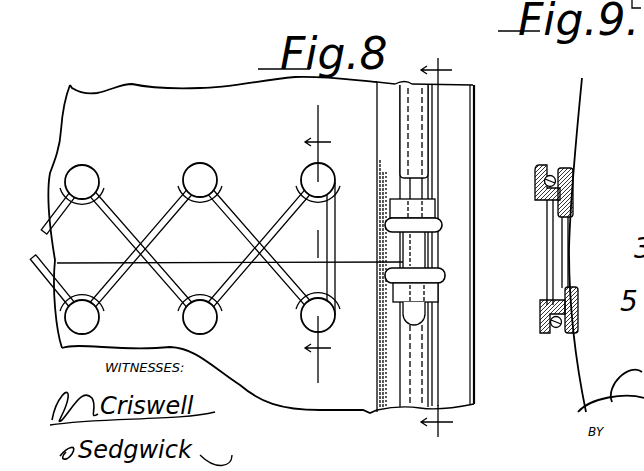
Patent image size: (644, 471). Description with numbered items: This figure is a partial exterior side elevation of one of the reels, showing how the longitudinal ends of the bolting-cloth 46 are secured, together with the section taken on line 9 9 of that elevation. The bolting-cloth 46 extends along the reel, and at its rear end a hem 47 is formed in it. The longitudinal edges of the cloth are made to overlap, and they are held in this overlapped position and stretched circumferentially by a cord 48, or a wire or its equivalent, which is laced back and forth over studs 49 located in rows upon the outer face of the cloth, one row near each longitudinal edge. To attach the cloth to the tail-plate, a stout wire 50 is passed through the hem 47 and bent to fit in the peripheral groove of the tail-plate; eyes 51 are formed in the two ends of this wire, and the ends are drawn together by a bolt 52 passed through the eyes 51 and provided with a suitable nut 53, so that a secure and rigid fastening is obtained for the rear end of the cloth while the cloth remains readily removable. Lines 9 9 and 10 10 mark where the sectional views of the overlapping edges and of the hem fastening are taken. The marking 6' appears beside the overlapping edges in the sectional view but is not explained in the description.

In FIG. 8, the bolting-cloth 46 is at (361, 247).
In FIG. 9, the bolting-cloth 46 is at (577, 100).
In FIG. 8, the hem 47 is at (408, 125).
In FIG. 8, the cord 48 is at (250, 254).
In FIG. 9, the cord 48 is at (553, 240).
In FIG. 8, the studs 49 is at (224, 150).
In FIG. 9, the studs 49 is at (553, 152).
In FIG. 8, the stout wire 50 is at (418, 190).
In FIG. 8, the eyes 51 is at (437, 223).
In FIG. 8, the bolt 52 is at (403, 249).
In FIG. 8, the nut 53 is at (438, 298).
In FIG. 8, the section line 9 9 is at (316, 244).
In FIG. 8, the section line 10 10 is at (439, 248).
In FIG. 9, the bar 6' is at (588, 252).